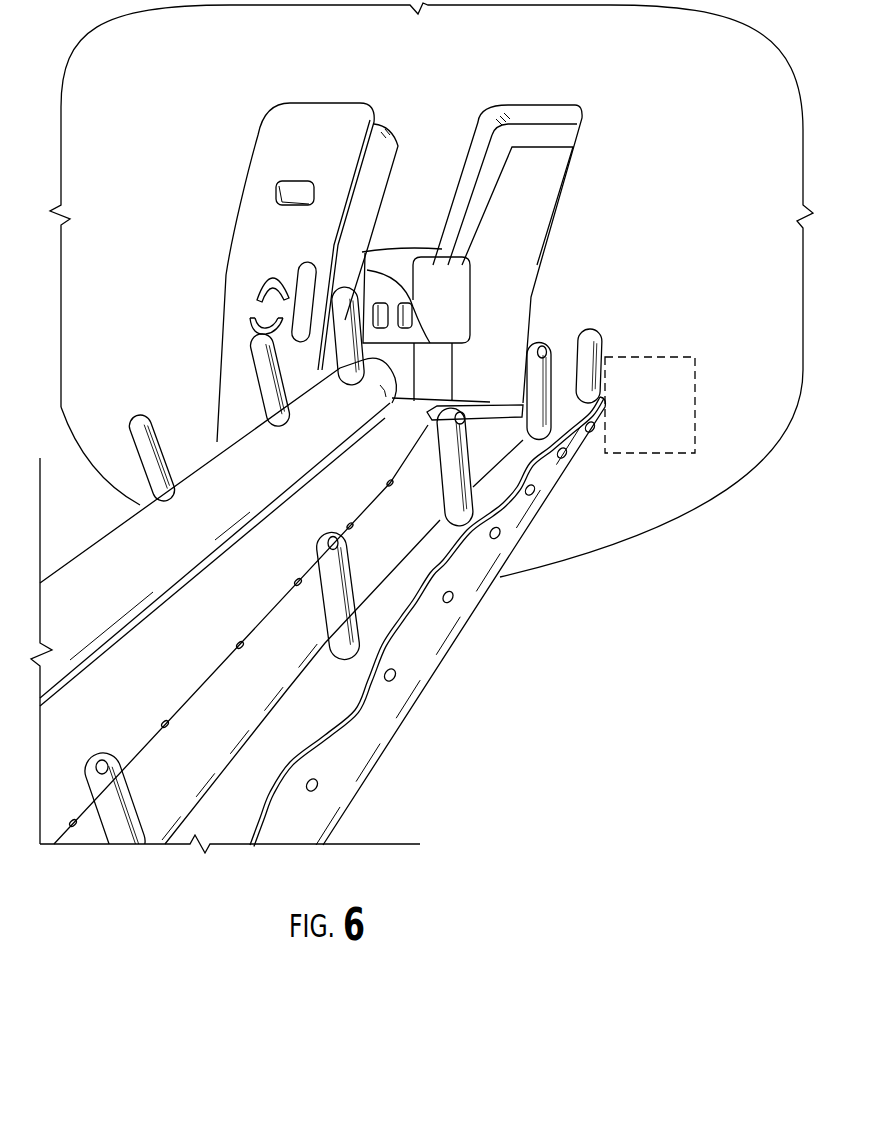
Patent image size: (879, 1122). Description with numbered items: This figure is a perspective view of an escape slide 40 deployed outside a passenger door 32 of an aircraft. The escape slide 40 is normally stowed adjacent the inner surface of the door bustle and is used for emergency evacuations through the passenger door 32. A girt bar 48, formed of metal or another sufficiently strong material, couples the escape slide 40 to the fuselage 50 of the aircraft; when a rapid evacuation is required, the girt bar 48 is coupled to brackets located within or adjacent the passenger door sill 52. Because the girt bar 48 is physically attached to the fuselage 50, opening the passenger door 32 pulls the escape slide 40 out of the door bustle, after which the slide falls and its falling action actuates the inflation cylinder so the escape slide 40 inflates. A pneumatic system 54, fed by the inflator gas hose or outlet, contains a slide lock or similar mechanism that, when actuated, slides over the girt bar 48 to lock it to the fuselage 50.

The passenger door 32 is at (263, 247).
The fuselage 50 is at (562, 227).
The passenger door sill 52 is at (480, 378).
The girt bar 48 is at (483, 401).
The escape slide 40 is at (483, 567).
The pneumatic system 54 is at (702, 407).